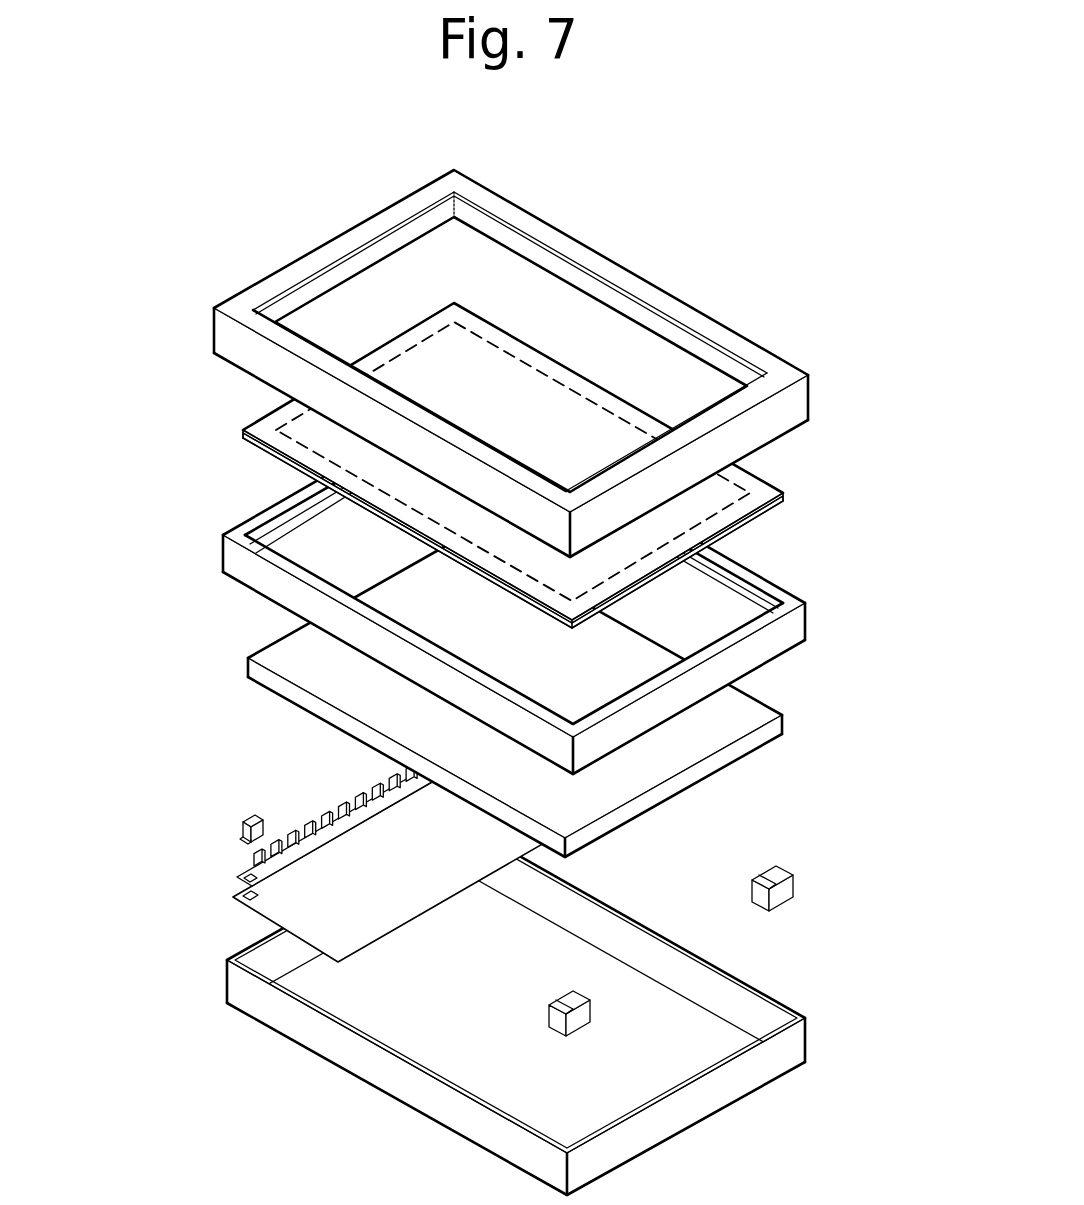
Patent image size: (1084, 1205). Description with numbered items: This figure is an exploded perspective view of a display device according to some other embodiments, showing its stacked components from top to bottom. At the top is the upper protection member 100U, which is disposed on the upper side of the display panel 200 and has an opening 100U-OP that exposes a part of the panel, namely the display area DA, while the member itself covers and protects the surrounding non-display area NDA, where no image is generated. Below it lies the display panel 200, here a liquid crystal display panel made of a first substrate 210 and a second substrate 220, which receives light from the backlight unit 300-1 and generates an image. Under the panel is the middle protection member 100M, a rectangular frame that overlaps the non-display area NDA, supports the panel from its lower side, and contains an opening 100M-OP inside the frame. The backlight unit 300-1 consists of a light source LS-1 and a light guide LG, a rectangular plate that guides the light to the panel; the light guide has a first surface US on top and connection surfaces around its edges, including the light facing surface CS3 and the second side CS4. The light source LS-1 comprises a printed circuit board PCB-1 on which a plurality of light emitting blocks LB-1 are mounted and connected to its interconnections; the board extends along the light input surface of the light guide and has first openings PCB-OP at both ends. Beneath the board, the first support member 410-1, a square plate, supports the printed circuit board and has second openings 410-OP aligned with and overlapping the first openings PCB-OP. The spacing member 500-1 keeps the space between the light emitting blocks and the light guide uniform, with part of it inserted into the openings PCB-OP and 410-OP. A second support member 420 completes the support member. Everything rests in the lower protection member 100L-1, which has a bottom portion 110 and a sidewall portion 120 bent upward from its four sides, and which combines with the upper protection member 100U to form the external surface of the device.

The upper protection member 100U is at (557, 363).
The opening 100U-OP is at (565, 321).
The display area DA is at (310, 434).
The non-display area NDA is at (243, 431).
The display panel 200 is at (552, 465).
The second substrate 220 is at (772, 495).
The first substrate 210 is at (772, 518).
The middle protection member 100M is at (577, 587).
The opening 100M-OP is at (712, 620).
The backlight unit 300-1 is at (469, 710).
The light guide LG is at (506, 705).
The light source LS-1 is at (282, 787).
The light emitting blocks LB-1 is at (372, 786).
The printed circuit board PCB-1 is at (282, 804).
The first surface US is at (752, 713).
The light facing surface CS3 is at (773, 728).
The second side CS4 is at (556, 855).
The spacing member 500-1 is at (246, 818).
The second support member 420 is at (578, 998).
The first opening PCB-OP is at (246, 876).
The second opening 410-OP is at (190, 892).
The first support member 410-1 is at (425, 817).
The sidewall portion 120 is at (370, 1065).
The bottom portion 110 is at (487, 1065).
The lower protection member 100L-1 is at (516, 1010).